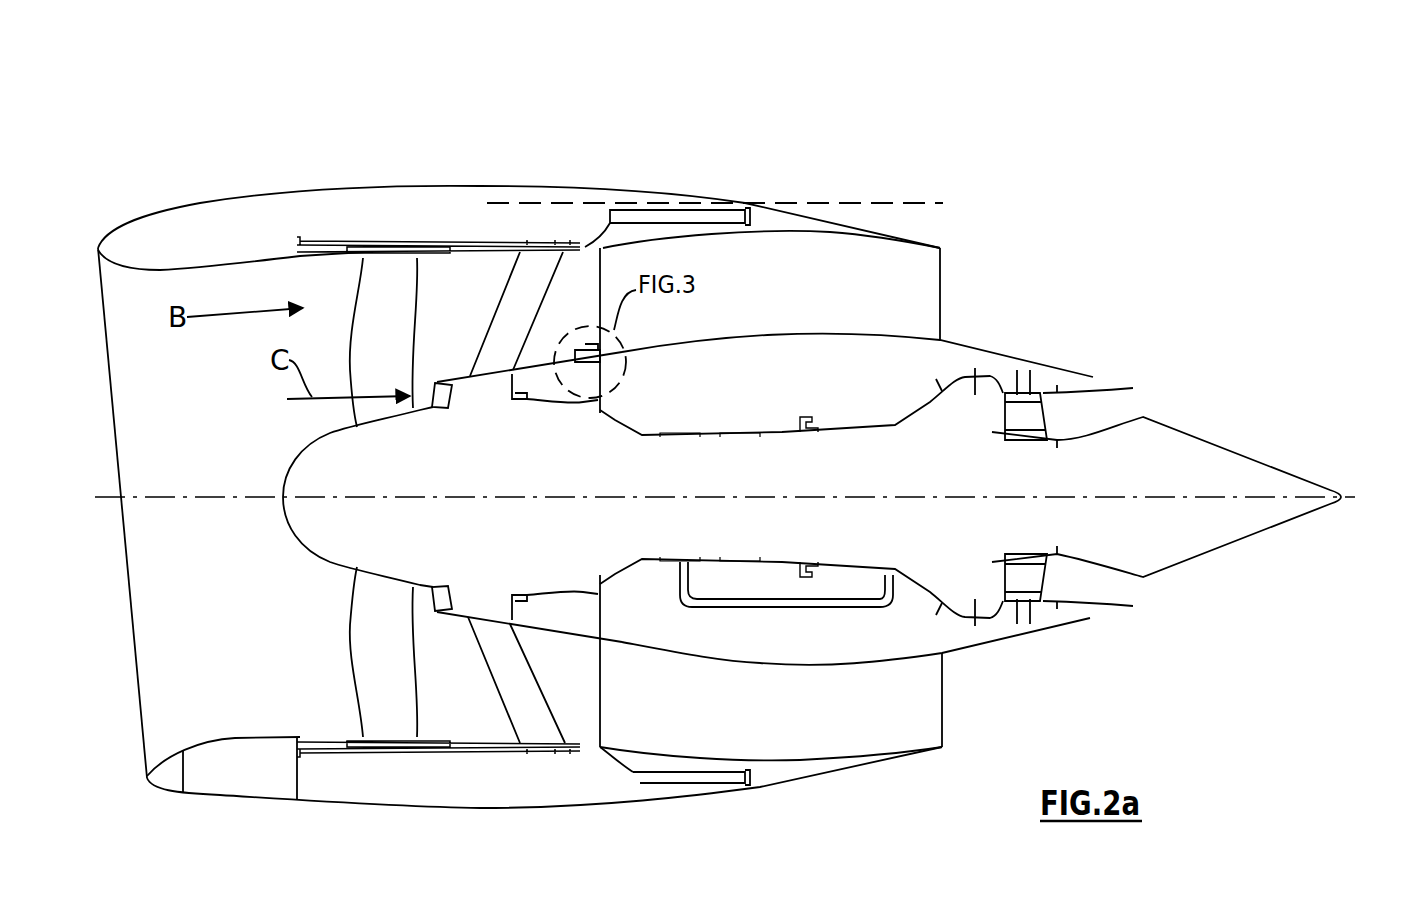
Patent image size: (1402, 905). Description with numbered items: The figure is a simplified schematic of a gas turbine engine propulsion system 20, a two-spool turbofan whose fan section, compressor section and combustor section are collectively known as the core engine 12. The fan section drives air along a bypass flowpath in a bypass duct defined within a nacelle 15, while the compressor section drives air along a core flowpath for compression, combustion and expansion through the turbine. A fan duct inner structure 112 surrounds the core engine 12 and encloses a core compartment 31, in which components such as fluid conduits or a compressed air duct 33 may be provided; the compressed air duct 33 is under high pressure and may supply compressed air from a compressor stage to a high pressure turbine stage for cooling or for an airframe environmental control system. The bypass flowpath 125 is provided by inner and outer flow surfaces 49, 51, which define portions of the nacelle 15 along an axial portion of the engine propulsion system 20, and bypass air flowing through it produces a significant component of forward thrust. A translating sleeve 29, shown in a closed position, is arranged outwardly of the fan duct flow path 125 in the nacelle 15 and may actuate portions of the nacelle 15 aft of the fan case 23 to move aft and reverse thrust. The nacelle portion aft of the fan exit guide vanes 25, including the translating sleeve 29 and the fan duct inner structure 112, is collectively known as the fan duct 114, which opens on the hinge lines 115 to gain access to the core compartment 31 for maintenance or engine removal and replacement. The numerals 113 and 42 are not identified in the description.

The gas turbine engine propulsion system 20 is at (825, 139).
The nacelle 15 is at (268, 184).
The translating sleeve 29 is at (745, 197).
The hinge lines 115 is at (937, 203).
The bypass flowpath 125 is at (760, 315).
The fan duct inner structure 112 is at (713, 338).
The core engine 12 is at (788, 423).
The core inlet splitter 113 is at (489, 384).
The fan blade 42 is at (357, 629).
The fan exit guide vanes 25 is at (508, 673).
The fan case 23 is at (440, 748).
The inner flow surface 49 is at (680, 656).
The outer flow surface 51 is at (693, 756).
The core compartment 31 is at (828, 641).
The compressed air duct 33 is at (899, 613).
The fan duct 114 is at (957, 717).